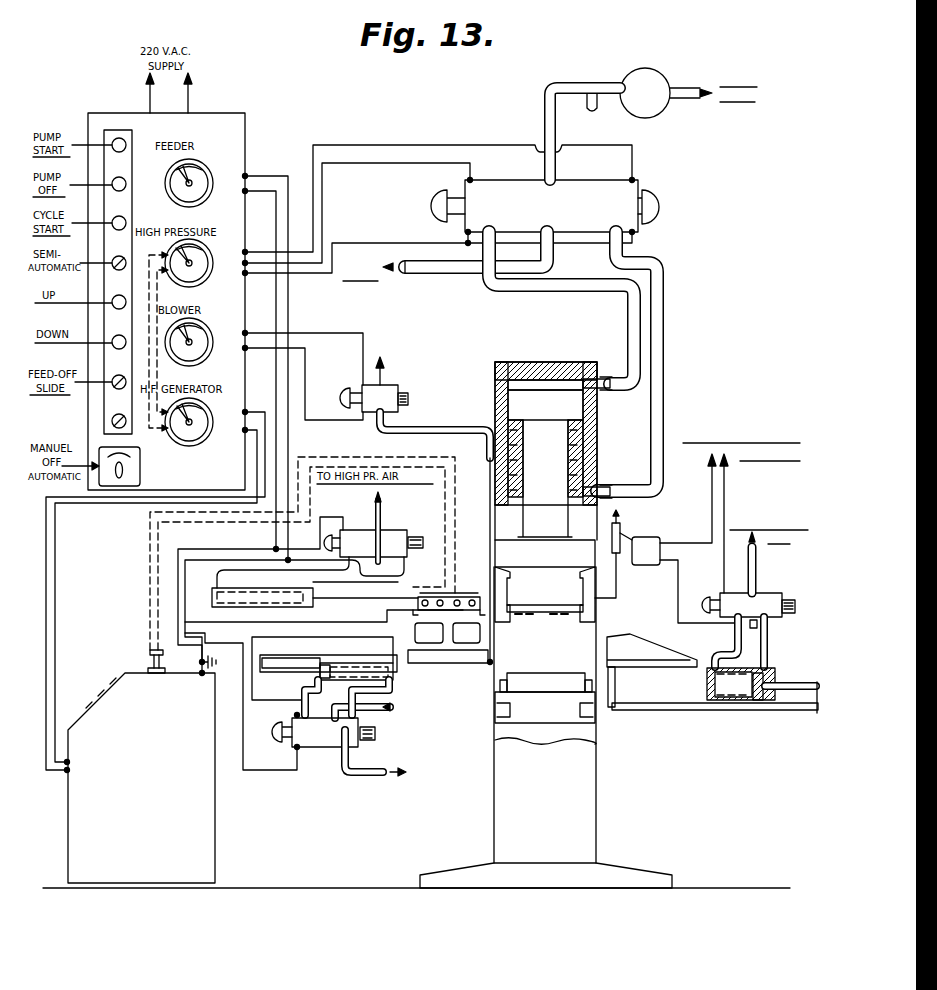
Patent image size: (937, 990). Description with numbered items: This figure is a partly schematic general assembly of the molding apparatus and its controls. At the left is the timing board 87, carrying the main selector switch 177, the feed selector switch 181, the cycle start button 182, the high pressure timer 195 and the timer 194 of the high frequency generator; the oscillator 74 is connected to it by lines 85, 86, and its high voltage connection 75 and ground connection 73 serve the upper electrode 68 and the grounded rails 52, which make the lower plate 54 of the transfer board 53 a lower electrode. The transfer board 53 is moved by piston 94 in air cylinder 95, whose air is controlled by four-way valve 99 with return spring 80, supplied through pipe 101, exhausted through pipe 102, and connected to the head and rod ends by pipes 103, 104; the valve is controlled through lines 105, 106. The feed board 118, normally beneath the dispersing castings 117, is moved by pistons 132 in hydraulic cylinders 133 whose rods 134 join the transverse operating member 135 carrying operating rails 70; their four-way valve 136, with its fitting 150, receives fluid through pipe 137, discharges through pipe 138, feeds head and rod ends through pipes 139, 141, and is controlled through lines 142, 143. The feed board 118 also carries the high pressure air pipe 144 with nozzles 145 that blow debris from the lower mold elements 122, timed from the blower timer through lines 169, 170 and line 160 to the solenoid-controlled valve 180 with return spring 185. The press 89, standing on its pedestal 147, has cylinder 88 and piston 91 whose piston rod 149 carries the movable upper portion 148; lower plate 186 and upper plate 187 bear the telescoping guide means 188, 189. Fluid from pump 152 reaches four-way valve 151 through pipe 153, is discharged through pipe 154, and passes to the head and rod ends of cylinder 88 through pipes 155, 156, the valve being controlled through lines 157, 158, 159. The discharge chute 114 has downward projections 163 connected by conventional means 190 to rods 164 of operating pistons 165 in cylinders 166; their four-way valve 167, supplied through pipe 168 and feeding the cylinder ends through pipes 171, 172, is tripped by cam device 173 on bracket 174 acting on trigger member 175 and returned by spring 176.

The rails 52 is at (545, 607).
The transfer board 53 is at (458, 597).
The lower plate 54 is at (500, 620).
The upper electrode 68 is at (462, 575).
The operating rails 70 is at (327, 664).
The ground connection 73 is at (258, 622).
The oscillator 74 is at (222, 840).
The high voltage connection 75 is at (150, 590).
The return spring 80 is at (408, 535).
The line 85 is at (46, 647).
The line 86 is at (55, 628).
The timing board 87 is at (218, 485).
The cylinder 88 is at (597, 440).
The press 89 is at (551, 436).
The piston 91 is at (508, 405).
The piston 94 is at (313, 604).
The air cylinder 95 is at (240, 598).
The four-way valve 99 is at (352, 530).
The pipe 101 is at (382, 512).
The pipe 102 is at (404, 560).
The pipe 103 is at (217, 588).
The pipe 104 is at (355, 591).
The line 105 is at (264, 198).
The line 106 is at (270, 176).
The discharge chute 114 is at (650, 632).
The dispersing castings 117 is at (415, 630).
The feed board 118 is at (485, 668).
The lower mold elements 122 is at (545, 676).
The pistons 132 is at (337, 663).
The hydraulic cylinders 133 is at (395, 676).
The rods 134 is at (292, 668).
The transverse operating member 135 is at (300, 658).
The four-way valve 136 is at (313, 740).
The pipe 137 is at (592, 112).
The pipe 138 is at (352, 775).
The pipe 139 is at (393, 690).
The pipe 141 is at (302, 698).
The line 142 is at (230, 549).
The line 143 is at (212, 598).
The high pressure air pipe 144 is at (488, 458).
The nozzles 145 is at (495, 668).
The pedestal 147 is at (587, 807).
The movable upper portion 148 is at (584, 565).
The piston rod 149 is at (583, 480).
The valve fitting 150 is at (378, 735).
The four-way valve 151 is at (638, 190).
The pump 152 is at (660, 115).
The pipe 153 is at (545, 102).
The pipe 154 is at (425, 275).
The pipe 155 is at (588, 293).
The pipe 156 is at (665, 360).
The line 157 is at (368, 145).
The line 158 is at (380, 163).
The line 159 is at (380, 243).
The lead 160 is at (333, 333).
The downward projections 163 is at (615, 695).
The rods 164 is at (800, 682).
The operating pistons 165 is at (762, 702).
The cylinders 166 is at (707, 684).
The four-way valve 167 is at (765, 595).
The pipe 168 is at (757, 560).
The pipe 169 is at (752, 630).
The line 170 is at (305, 380).
The pipe 171 is at (734, 645).
The pipe 172 is at (768, 640).
The cam device 173 is at (620, 572).
The bracket 174 is at (629, 623).
The trigger member 175 is at (622, 532).
The spring 176 is at (795, 606).
The main selector switch 177 is at (141, 466).
The solenoid-controlled valve 180 is at (385, 385).
The feed selector switch 181 is at (112, 388).
The cycle start button 182 is at (126, 223).
The return spring 185 is at (408, 402).
The lower plate 186 is at (596, 728).
The upper plate 187 is at (506, 575).
The telescoping guide means 188 is at (545, 698).
The telescoping guide means 189 is at (583, 620).
The conventional means 190 is at (688, 712).
The timer 194 is at (196, 438).
The high pressure timer 195 is at (205, 280).